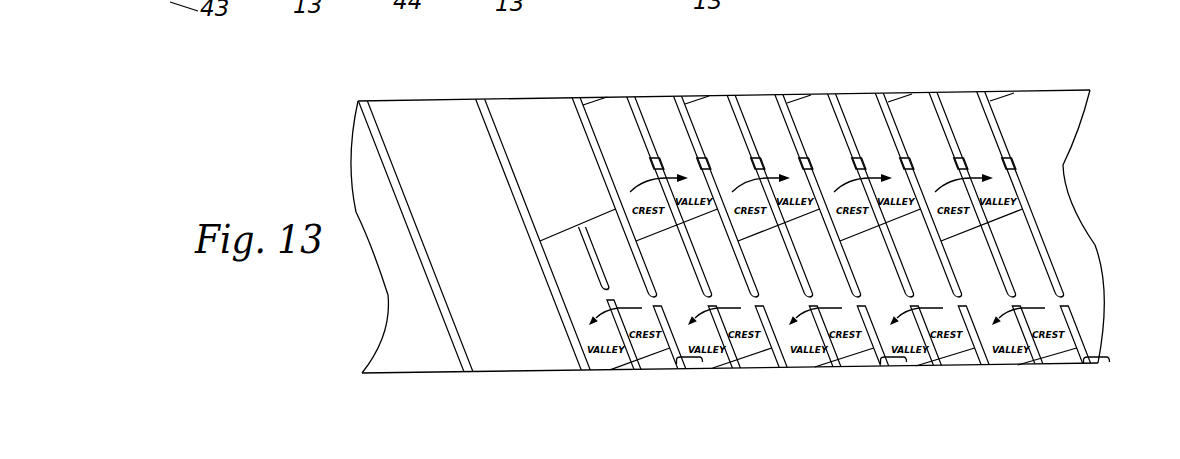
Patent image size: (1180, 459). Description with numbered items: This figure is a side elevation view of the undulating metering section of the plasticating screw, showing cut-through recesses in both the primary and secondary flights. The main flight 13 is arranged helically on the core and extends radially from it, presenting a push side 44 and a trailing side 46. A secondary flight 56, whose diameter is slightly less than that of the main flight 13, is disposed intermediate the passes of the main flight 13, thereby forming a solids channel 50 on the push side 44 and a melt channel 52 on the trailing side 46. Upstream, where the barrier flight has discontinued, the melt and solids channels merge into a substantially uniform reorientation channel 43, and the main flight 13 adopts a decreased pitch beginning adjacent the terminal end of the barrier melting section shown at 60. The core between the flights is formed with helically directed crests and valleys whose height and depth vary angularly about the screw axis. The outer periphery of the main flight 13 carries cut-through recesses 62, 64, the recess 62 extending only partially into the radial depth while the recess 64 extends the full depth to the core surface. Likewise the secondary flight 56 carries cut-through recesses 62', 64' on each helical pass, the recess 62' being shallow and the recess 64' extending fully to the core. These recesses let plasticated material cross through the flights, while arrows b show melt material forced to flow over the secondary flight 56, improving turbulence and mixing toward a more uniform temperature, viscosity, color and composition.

The main flight 13 is at (676, 96).
The reorientation channel 43 is at (417, 350).
The push side 44 is at (377, 131).
The trailing side 46 is at (670, 362).
The solids channel 50 is at (720, 97).
The melt channel 52 is at (758, 100).
The secondary flight 56 is at (632, 97).
The terminal end of barrier melting section 60 is at (418, 228).
The cut-through recess 62 is at (835, 142).
The cut-through recess 62' is at (784, 138).
The cut-through recess 64 is at (874, 311).
The cut-through recess 64' is at (812, 298).
The arrows b is at (630, 192).